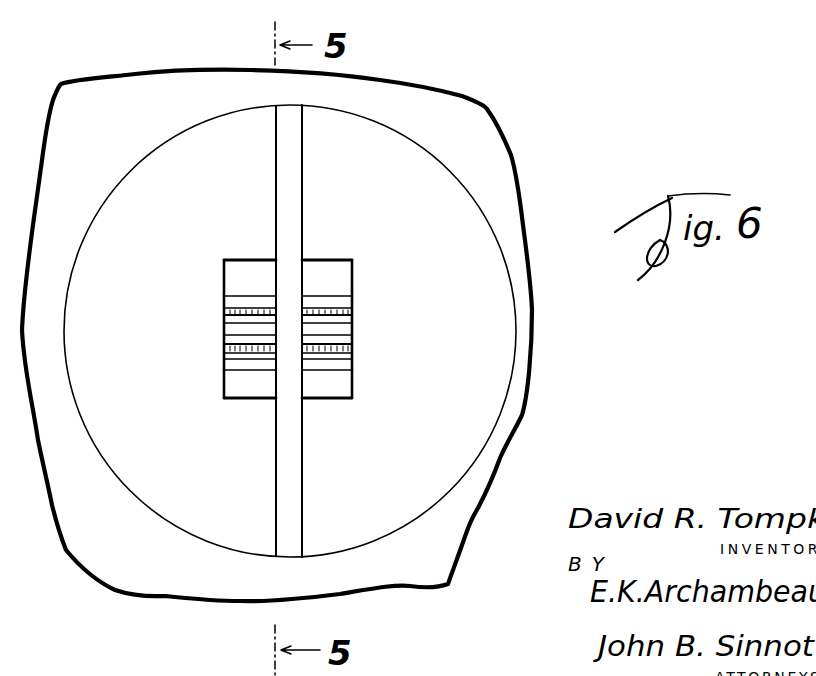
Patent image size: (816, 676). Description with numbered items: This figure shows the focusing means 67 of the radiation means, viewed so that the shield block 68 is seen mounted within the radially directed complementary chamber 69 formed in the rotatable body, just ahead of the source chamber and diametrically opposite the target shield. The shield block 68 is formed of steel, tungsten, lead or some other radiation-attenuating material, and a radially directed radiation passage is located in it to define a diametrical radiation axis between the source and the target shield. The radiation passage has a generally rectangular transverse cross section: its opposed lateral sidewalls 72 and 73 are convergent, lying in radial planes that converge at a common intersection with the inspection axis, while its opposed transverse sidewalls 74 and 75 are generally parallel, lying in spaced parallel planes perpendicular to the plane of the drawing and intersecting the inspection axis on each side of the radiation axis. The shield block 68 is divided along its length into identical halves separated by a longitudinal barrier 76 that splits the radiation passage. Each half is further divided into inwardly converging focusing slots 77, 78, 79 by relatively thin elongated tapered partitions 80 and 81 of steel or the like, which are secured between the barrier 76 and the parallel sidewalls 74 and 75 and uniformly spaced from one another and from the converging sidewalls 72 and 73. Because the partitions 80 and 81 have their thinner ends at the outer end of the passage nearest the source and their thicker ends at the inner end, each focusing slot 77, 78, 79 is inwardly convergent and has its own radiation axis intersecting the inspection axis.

The focusing means 67 is at (294, 347).
The shield block 68 is at (452, 207).
The chamber 69 is at (366, 116).
The lateral sidewall 72 is at (335, 272).
The lateral sidewall 73 is at (326, 388).
The transverse sidewall 74 is at (230, 267).
The transverse sidewall 75 is at (354, 397).
The longitudinal barrier 76 is at (274, 106).
The focusing slot 77 is at (225, 303).
The focusing slot 78 is at (225, 332).
The focusing slot 79 is at (225, 360).
The tapered partition 80 is at (352, 323).
The tapered partition 81 is at (345, 350).